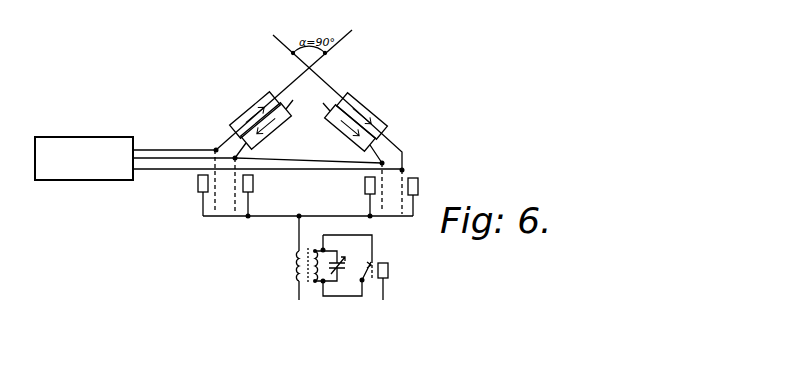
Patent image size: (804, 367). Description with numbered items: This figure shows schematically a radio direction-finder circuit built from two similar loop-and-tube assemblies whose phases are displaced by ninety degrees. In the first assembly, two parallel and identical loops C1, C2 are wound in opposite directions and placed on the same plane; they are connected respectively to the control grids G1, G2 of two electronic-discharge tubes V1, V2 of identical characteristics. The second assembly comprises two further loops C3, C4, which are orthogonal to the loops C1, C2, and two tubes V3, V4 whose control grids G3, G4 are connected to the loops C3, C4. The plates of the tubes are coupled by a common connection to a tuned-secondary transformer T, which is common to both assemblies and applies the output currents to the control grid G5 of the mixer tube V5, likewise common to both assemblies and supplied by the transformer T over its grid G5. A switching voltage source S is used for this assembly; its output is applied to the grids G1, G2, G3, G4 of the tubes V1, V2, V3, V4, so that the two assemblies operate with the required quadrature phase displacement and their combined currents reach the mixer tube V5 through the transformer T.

The switching voltage source S is at (117, 138).
The loop C1 is at (284, 90).
The loop C2 is at (264, 129).
The loop C3 is at (352, 133).
The loop C4 is at (337, 102).
The electronic-discharge tube V1 is at (193, 195).
The electronic-discharge tube V2 is at (259, 195).
The tube V3 is at (359, 196).
The tube V4 is at (425, 197).
The mixer tube V5 is at (393, 281).
The control grid G1 is at (212, 182).
The control grid G2 is at (236, 186).
The control grid G3 is at (380, 189).
The control grid G4 is at (401, 192).
The control grid G5 is at (382, 262).
The tuned-secondary transformer T is at (290, 258).